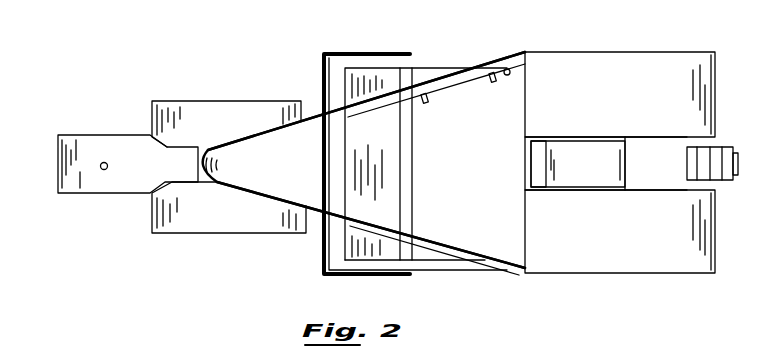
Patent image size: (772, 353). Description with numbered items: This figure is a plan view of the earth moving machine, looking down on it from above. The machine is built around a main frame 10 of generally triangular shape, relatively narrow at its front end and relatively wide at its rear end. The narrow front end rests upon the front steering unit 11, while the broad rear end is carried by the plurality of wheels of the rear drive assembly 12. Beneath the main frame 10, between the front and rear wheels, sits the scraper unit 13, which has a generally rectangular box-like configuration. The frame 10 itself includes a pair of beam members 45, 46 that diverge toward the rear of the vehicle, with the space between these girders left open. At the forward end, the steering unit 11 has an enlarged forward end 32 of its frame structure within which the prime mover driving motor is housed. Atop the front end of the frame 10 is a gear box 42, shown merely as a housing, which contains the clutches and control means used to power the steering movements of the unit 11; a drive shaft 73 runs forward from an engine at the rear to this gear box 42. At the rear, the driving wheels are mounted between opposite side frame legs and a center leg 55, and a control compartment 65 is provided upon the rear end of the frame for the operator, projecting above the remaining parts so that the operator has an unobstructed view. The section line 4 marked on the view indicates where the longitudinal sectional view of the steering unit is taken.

The section line 4— 4 is at (35, 155).
The main frame 10 is at (513, 280).
The front steering unit 11 is at (223, 130).
The rear drive assembly 12 is at (616, 102).
The scraper unit 13 is at (480, 148).
The enlarged forward end of the steering unit frame structure 32 is at (86, 135).
The gear box 42 is at (262, 143).
The beam member 45 is at (450, 80).
The beam member 46 is at (440, 238).
The center leg 55 is at (723, 147).
The control compartment 65 is at (594, 174).
The drive shaft 73 is at (445, 92).